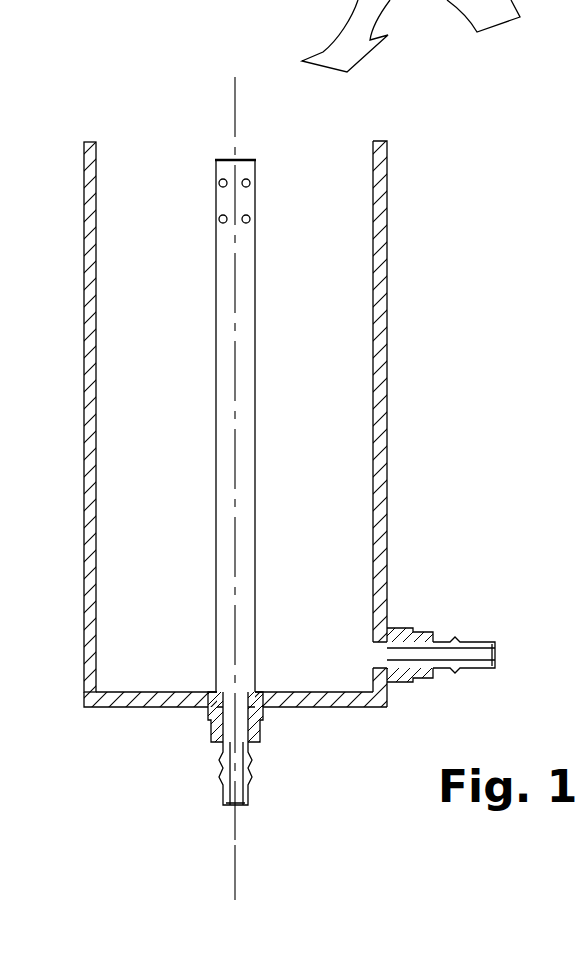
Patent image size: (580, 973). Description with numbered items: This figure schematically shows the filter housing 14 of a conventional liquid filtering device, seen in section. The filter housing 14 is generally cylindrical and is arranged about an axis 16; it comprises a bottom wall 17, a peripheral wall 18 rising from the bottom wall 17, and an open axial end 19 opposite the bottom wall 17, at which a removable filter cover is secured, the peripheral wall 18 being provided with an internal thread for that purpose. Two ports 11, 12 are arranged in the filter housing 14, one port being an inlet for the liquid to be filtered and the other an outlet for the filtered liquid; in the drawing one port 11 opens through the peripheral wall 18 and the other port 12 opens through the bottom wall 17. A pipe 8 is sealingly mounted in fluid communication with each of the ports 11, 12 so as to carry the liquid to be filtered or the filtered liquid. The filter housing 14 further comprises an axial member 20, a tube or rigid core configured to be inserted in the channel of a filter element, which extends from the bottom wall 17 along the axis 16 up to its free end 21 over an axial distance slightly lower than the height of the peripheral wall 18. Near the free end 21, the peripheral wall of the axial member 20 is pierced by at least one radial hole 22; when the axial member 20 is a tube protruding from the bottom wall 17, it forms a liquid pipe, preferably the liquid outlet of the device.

The pipe 8 is at (248, 793).
The port 11 is at (378, 658).
The port 12 is at (243, 695).
The filter housing 14 is at (62, 453).
The axis 16 is at (235, 847).
The bottom wall 17 is at (132, 700).
The peripheral wall 18 is at (90, 512).
The open axial end 19 is at (145, 160).
The axial member 20 is at (245, 273).
The free end 21 is at (247, 158).
The radial hole 22 is at (250, 219).